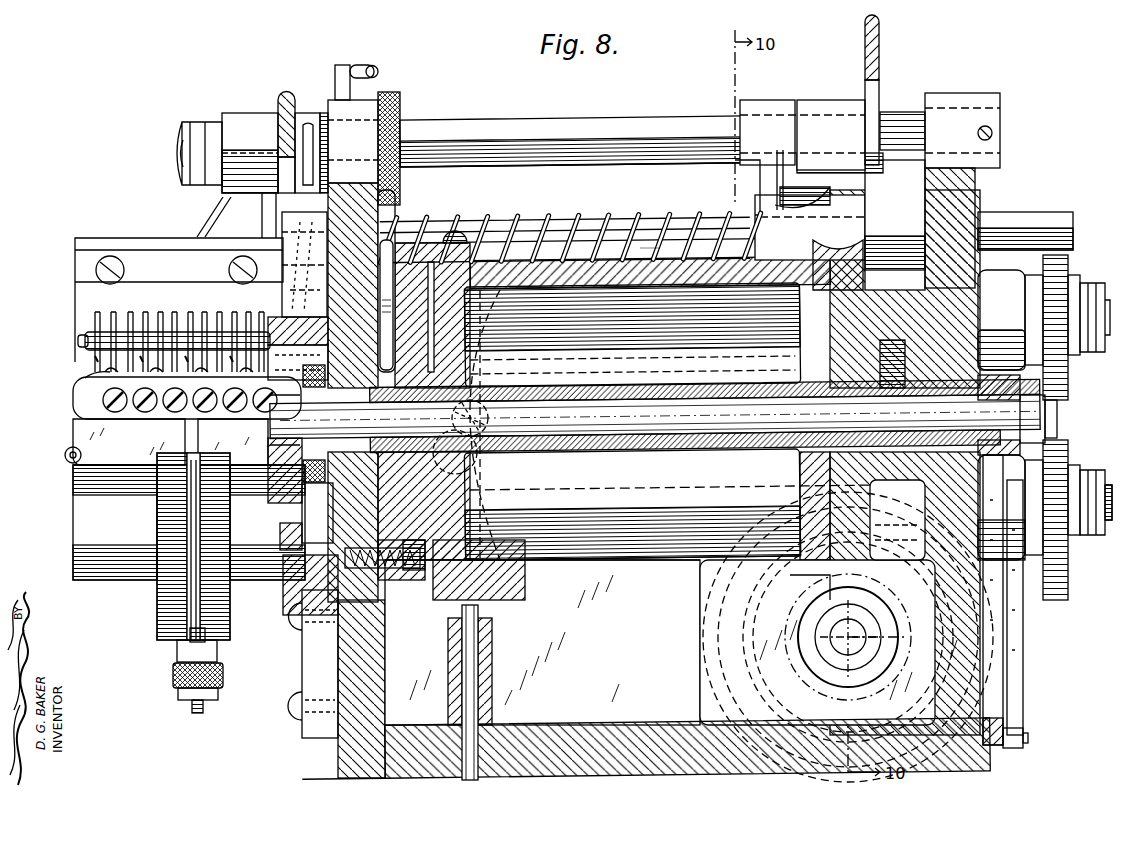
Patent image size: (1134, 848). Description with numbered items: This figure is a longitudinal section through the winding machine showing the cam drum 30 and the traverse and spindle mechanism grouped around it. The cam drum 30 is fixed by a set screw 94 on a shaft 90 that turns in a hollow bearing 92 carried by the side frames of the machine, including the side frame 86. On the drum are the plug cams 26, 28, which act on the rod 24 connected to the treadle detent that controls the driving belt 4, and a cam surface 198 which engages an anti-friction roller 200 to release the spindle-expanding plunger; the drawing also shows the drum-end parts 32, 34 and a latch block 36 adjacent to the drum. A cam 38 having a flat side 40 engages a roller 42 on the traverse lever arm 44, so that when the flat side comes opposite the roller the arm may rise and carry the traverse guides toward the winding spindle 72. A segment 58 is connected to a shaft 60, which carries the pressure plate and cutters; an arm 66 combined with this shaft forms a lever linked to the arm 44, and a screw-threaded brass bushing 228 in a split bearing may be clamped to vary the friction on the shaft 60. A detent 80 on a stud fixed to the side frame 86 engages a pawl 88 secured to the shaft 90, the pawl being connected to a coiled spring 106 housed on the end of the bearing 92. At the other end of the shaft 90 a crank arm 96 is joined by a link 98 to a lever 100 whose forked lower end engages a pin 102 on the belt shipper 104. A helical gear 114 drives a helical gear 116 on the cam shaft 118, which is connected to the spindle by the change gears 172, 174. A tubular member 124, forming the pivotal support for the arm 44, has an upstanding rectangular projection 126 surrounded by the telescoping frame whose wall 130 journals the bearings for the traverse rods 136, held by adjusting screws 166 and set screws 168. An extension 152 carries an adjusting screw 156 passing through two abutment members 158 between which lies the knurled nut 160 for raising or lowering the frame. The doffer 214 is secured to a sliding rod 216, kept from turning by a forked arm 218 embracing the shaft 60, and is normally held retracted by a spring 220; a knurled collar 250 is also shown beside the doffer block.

The belt 4 is at (708, 690).
The rod 24 is at (467, 635).
The plug cam 26 is at (478, 469).
The plug cam 28 is at (463, 240).
The cam drum 30 is at (646, 587).
The cam 32 is at (852, 640).
The cam shaft 34 is at (890, 655).
The latch block 36 is at (847, 240).
The cam 38 is at (408, 232).
The flat side 40 is at (450, 513).
The roller 42 is at (410, 590).
The traverse lever arm 44 is at (286, 593).
The segment 58 is at (880, 35).
The shaft 60 is at (503, 120).
The arm 66 is at (287, 97).
The winding spindle 72 is at (82, 348).
The detent 80 is at (280, 318).
The side frame 86 is at (975, 183).
The pawl 88 is at (278, 492).
The shaft 90 is at (628, 406).
The hollow bearing 92 is at (737, 385).
The set screw 94 is at (897, 343).
The crank arm 96 is at (1032, 400).
The link 98 is at (1060, 408).
The lever 100 is at (1020, 652).
The pin 102 is at (1030, 737).
The belt shipper 104 is at (1028, 752).
The coiled spring 106 is at (290, 392).
The helical gear 114 is at (712, 650).
The helical gear 116 is at (875, 500).
The cam shaft 118 is at (1110, 488).
The tubular member 124 is at (110, 578).
The upstanding rectangular projection 126 is at (78, 468).
The wall 130 is at (80, 400).
The rods 136 is at (85, 339).
The extension 152 is at (193, 546).
The adjusting screw 156 is at (210, 655).
The abutment members 158 is at (170, 690).
The knurled adjusting nut 160 is at (223, 676).
The adjusting screws 166 is at (140, 390).
The set screws 168 is at (108, 372).
The gear 172 is at (1070, 264).
The gear 174 is at (1052, 428).
The cam surface 198 is at (487, 369).
The anti-friction roller 200 is at (548, 413).
The doffer 214 is at (304, 264).
The sliding rod 216 is at (565, 225).
The forked arm 218 is at (762, 107).
The spring 220 is at (647, 203).
The brass bushing 228 is at (395, 93).
The knurled collar 250 is at (310, 333).